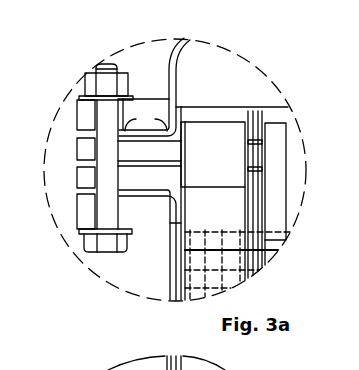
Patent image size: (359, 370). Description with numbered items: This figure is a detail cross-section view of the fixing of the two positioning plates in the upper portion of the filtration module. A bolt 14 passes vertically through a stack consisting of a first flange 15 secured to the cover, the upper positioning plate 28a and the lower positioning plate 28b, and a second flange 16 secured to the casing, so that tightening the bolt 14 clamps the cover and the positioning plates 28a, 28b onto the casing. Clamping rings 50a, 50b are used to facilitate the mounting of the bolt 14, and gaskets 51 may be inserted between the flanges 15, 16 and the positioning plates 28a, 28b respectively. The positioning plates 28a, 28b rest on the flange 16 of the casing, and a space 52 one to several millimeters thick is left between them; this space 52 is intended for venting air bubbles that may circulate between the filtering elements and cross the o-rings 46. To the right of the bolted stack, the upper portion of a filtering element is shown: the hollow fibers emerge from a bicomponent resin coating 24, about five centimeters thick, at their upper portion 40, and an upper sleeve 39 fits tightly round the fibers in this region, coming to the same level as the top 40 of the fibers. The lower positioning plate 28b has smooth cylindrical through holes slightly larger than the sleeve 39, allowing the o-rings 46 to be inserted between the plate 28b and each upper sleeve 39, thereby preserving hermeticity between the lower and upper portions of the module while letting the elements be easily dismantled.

The bolt 14 is at (107, 105).
The first flange 15 is at (58, 108).
The second flange 16 is at (122, 236).
The resin coating 24 is at (278, 138).
The upper positioning plate 28a is at (85, 152).
The lower positioning plate 28b is at (79, 182).
The upper sleeve 39 is at (251, 133).
The upper portion of the hollow fibers 40 is at (230, 121).
The o-ring 46 is at (262, 183).
The clamping ring 50a is at (147, 110).
The clamping ring 50b is at (138, 218).
The gasket 51 is at (153, 137).
The space 52 is at (76, 169).